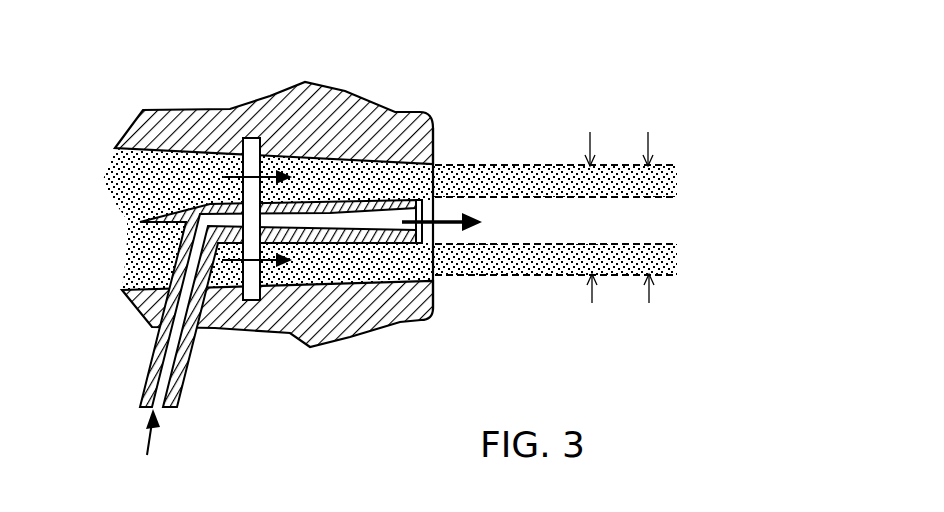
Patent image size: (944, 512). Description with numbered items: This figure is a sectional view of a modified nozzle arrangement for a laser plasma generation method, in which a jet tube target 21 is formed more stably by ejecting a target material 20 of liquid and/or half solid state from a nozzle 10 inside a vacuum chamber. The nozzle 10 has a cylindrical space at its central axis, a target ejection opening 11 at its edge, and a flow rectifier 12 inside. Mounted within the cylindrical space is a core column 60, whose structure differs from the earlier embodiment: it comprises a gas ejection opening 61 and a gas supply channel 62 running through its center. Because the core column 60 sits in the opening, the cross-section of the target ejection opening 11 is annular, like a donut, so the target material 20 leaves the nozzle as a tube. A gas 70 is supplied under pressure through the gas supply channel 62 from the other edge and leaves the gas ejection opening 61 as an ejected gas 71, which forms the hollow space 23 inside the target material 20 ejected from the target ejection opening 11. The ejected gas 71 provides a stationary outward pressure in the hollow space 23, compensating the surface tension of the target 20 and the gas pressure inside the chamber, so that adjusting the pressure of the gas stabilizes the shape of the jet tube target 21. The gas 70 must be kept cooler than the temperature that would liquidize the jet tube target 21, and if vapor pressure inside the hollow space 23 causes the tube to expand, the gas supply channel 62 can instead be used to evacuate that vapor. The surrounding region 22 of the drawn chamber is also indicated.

The nozzle 10 is at (433, 251).
The target ejection opening 11 is at (437, 158).
The flow rectifier 12 is at (243, 137).
The target material 20 is at (340, 262).
The jet tube target 21 is at (527, 275).
The upper chamber 22 is at (677, 180).
The hollow space 23 is at (667, 220).
The core column 60 is at (321, 222).
The gas ejection opening 61 is at (422, 230).
The gas supply channel 62 is at (185, 356).
The gas 70 is at (147, 447).
The ejected gas 71 is at (493, 222).